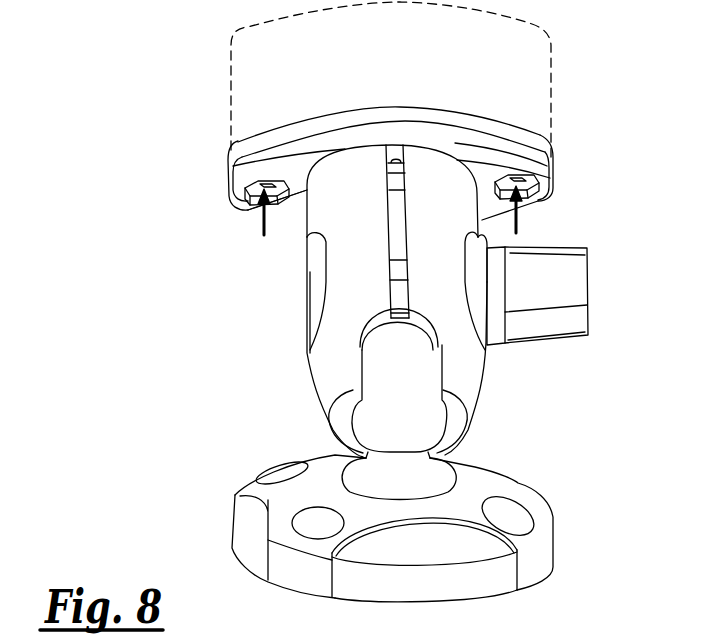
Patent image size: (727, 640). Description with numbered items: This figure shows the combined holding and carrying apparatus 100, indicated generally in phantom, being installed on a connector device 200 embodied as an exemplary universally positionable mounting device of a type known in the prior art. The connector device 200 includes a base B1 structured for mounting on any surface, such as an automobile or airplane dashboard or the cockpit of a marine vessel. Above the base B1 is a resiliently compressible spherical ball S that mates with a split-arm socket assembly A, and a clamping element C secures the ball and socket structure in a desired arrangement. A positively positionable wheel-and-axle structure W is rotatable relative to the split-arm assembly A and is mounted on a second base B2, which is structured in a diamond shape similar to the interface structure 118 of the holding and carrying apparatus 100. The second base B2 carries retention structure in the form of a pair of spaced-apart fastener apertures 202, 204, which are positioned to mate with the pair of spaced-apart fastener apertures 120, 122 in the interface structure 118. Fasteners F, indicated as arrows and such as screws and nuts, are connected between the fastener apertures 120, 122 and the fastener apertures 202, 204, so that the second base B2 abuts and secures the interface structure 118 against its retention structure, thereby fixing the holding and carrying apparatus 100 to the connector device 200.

The combined holding and carrying apparatus 100 is at (232, 45).
The interface structure 118 is at (370, 112).
The fastener aperture 120 is at (211, 141).
The fastener aperture 122 is at (536, 119).
The connector device 200 is at (253, 391).
The fastener aperture 202 is at (243, 205).
The fastener aperture 204 is at (533, 182).
The base B1 is at (243, 542).
The second base B2 is at (255, 187).
The split-arm socket assembly A is at (363, 220).
The spherical ball S is at (409, 399).
The clamping element C is at (531, 363).
The wheel-and-axle structure W is at (238, 242).
The fasteners F is at (398, 219).